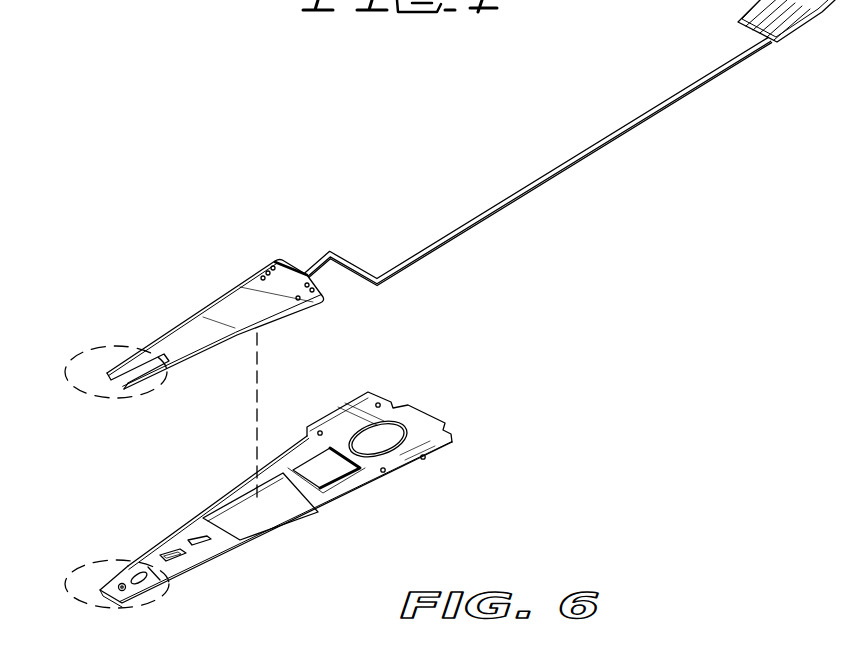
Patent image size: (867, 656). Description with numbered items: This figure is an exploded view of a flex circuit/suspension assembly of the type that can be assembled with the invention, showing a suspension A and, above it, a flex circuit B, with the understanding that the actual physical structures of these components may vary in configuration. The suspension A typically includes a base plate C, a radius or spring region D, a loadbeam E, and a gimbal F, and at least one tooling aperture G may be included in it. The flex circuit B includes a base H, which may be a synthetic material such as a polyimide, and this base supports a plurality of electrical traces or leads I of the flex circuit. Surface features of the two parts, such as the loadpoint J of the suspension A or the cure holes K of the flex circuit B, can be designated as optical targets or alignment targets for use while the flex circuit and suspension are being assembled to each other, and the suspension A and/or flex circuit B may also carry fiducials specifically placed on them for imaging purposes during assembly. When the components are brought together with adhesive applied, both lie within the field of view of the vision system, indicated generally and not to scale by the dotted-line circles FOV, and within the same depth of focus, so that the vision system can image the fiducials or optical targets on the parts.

The suspension A is at (483, 473).
The flex circuit B is at (567, 210).
The base plate C is at (425, 438).
The radius (spring region) D is at (293, 462).
The loadbeam E is at (245, 512).
The gimbal F is at (167, 580).
The tooling aperture G is at (193, 540).
The base H is at (240, 307).
The electrical traces or leads I is at (193, 357).
The loadpoint J is at (122, 583).
The cure holes K is at (280, 267).
The field of view FOV is at (97, 398).